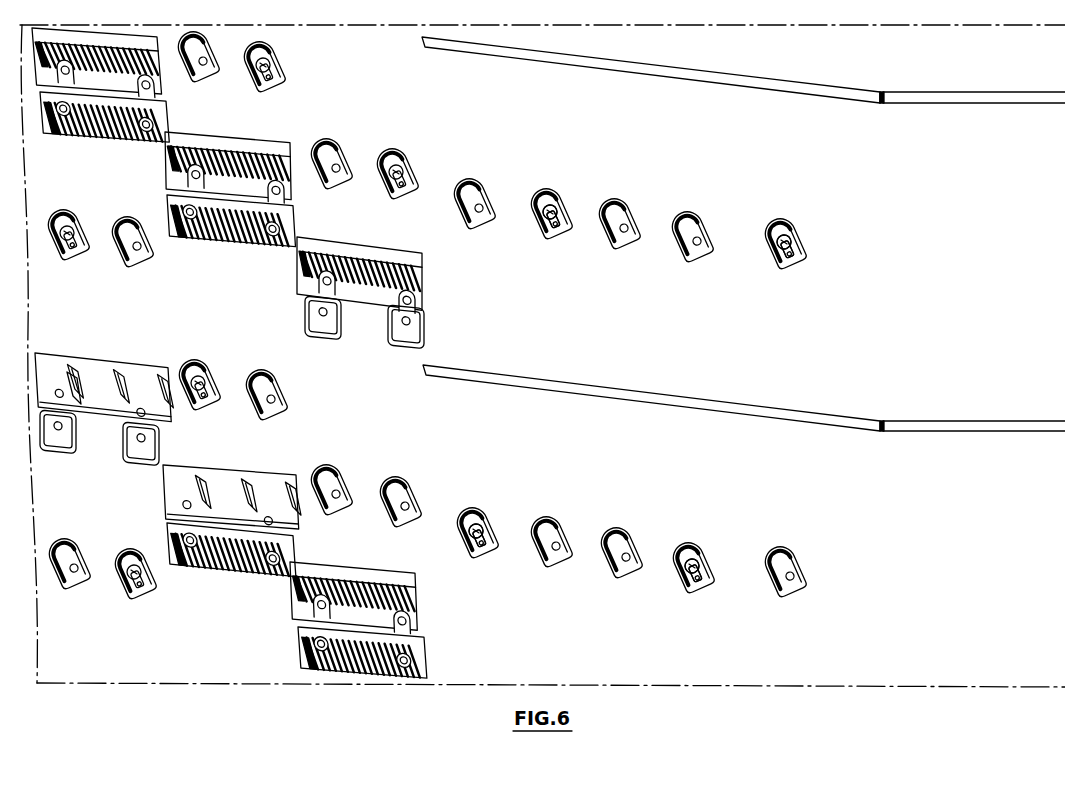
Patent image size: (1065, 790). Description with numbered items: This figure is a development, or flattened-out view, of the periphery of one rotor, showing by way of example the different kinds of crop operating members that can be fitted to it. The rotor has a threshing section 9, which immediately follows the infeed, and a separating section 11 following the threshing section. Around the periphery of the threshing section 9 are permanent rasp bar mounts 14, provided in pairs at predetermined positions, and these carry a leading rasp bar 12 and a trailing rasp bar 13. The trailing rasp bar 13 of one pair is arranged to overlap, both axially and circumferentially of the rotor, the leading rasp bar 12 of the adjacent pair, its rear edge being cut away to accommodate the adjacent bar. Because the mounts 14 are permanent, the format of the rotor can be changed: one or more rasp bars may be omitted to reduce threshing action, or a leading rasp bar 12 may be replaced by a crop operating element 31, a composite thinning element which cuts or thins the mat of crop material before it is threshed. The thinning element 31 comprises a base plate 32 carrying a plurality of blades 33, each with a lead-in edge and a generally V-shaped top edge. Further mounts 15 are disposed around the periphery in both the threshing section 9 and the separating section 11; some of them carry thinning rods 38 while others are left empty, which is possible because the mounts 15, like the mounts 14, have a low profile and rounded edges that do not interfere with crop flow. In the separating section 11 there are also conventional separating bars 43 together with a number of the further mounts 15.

The threshing section 9 is at (237, 655).
The separating section 11 is at (702, 645).
The leading rasp bar 12 is at (168, 94).
The trailing rasp bar 13 is at (104, 138).
The rasp bar mount 14 is at (392, 338).
The further mount 15 is at (470, 180).
The crop operating element 31 is at (110, 356).
The base plate 32 is at (52, 359).
The blade 33 is at (118, 392).
The thinning rod 38 is at (550, 228).
The separating bar 43 is at (736, 84).